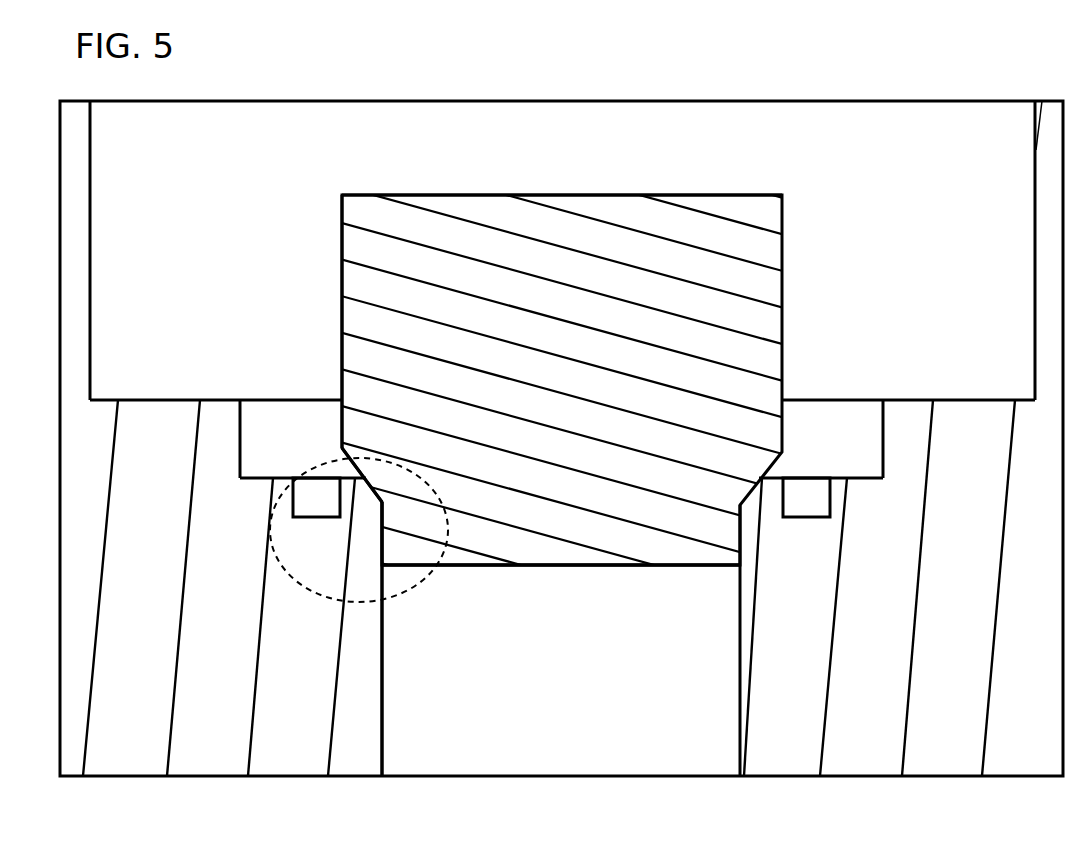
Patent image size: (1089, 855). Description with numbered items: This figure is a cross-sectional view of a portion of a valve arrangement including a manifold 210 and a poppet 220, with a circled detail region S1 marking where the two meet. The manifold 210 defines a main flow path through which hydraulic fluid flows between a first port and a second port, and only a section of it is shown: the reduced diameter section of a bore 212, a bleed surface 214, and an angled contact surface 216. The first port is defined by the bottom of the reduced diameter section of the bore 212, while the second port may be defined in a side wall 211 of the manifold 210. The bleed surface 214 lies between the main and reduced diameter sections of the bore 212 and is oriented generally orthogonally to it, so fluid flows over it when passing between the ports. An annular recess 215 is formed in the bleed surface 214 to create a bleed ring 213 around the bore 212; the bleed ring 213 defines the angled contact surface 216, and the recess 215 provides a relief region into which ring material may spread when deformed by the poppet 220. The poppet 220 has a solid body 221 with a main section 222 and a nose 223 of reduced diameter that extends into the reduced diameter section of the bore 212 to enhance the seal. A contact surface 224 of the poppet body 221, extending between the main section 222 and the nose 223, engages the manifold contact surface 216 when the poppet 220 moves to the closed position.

The manifold 210 is at (561, 469).
The side wall 211 is at (566, 250).
The bore 212 is at (382, 620).
The bleed ring 213 is at (347, 495).
The bleed surface 214 is at (852, 410).
The annular recess 215 is at (842, 398).
The contact surface 216 is at (422, 501).
The poppet 220 is at (662, 175).
The body 221 is at (561, 166).
The main section 222 is at (289, 321).
The nose 223 is at (561, 599).
The contact surface 224 is at (370, 487).
The detail region S1 is at (431, 601).